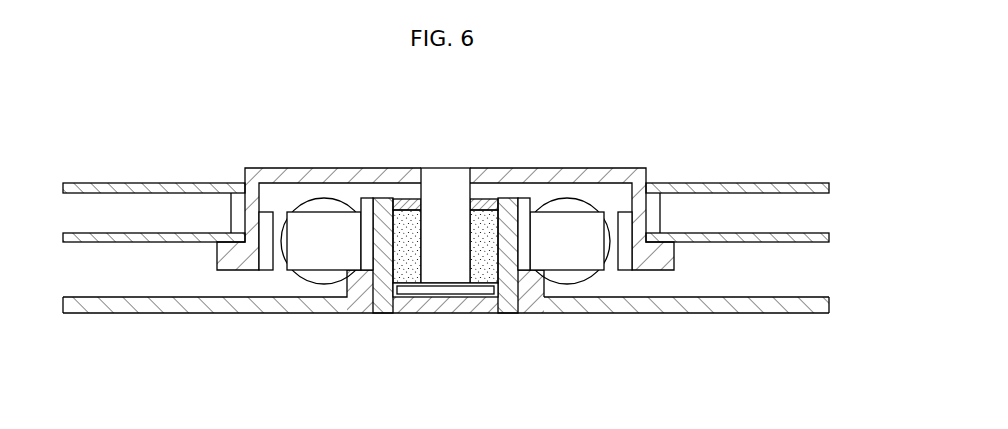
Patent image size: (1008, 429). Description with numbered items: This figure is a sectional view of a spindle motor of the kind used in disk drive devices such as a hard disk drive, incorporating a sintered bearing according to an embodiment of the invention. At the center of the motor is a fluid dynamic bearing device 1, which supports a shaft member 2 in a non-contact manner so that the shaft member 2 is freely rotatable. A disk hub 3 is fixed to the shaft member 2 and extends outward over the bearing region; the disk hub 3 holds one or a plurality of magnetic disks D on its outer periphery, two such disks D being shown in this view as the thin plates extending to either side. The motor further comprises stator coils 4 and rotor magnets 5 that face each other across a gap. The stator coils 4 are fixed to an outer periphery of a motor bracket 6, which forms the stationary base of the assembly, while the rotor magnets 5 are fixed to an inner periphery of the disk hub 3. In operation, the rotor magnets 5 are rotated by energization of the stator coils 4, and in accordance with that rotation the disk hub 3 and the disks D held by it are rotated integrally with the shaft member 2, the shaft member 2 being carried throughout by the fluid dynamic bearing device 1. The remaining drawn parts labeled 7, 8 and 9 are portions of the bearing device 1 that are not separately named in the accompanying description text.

The fluid dynamic bearing device 1 is at (458, 205).
The shaft member 2 is at (453, 168).
The disk hub 3 is at (623, 176).
The stator coil 4 is at (597, 263).
The rotor magnet 5 is at (625, 263).
The motor bracket 6 is at (534, 303).
The support column 7 is at (383, 203).
The elastic filler 8 is at (487, 211).
The cap 9 is at (403, 200).
The magnetic disk D is at (757, 183).